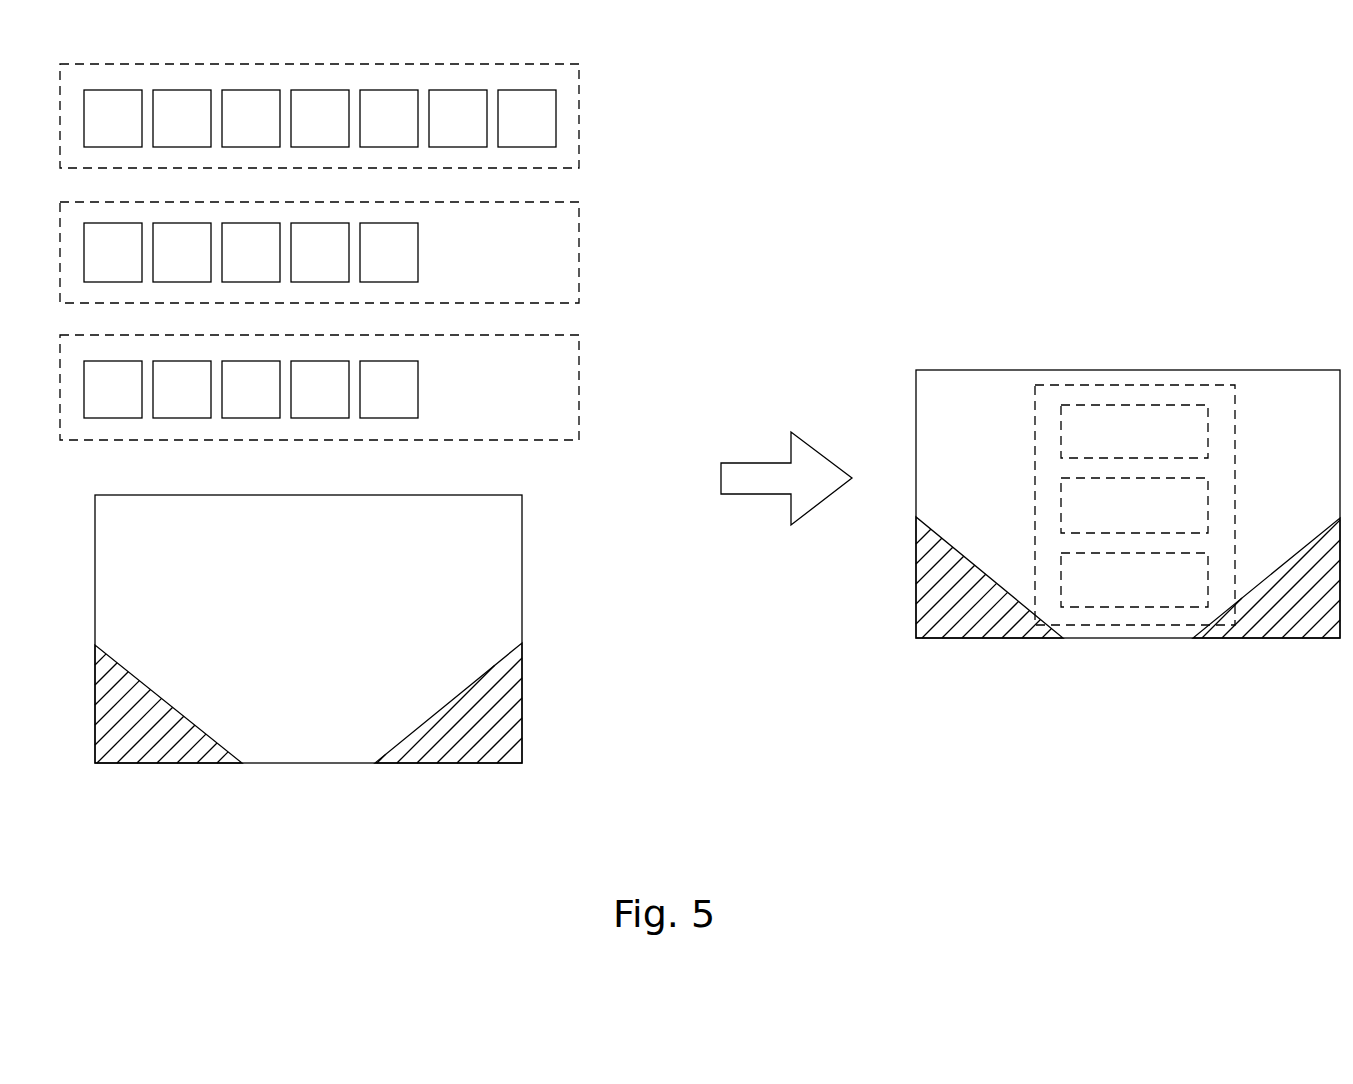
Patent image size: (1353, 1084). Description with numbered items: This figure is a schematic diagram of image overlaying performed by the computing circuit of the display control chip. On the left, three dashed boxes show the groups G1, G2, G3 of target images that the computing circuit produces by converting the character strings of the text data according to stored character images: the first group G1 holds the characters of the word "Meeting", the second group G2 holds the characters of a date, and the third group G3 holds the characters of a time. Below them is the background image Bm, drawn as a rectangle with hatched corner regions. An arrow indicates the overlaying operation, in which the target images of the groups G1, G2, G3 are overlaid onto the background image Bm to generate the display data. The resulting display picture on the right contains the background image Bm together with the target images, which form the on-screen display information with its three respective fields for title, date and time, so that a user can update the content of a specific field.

The group of target images G1 is at (579, 122).
The group of target images G2 is at (579, 262).
The group of target images G3 is at (579, 393).
The background image Bm is at (522, 643).